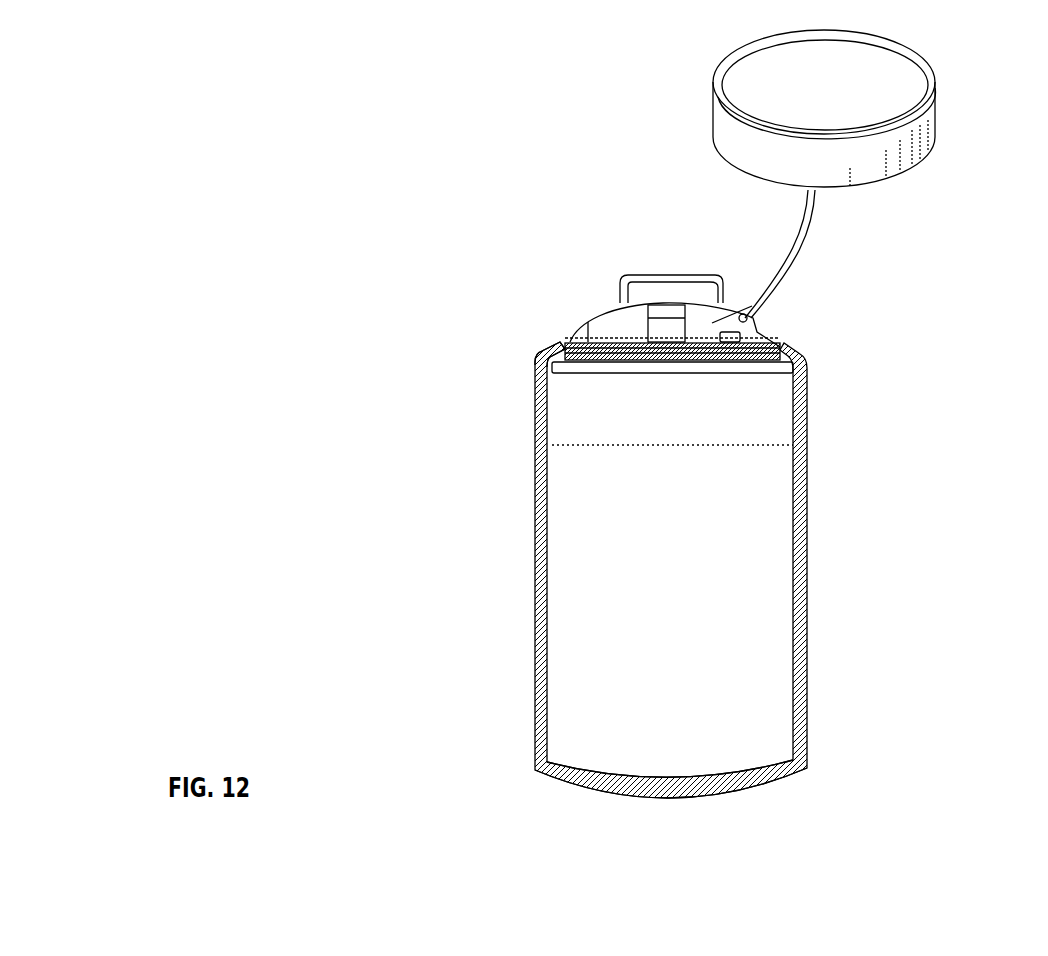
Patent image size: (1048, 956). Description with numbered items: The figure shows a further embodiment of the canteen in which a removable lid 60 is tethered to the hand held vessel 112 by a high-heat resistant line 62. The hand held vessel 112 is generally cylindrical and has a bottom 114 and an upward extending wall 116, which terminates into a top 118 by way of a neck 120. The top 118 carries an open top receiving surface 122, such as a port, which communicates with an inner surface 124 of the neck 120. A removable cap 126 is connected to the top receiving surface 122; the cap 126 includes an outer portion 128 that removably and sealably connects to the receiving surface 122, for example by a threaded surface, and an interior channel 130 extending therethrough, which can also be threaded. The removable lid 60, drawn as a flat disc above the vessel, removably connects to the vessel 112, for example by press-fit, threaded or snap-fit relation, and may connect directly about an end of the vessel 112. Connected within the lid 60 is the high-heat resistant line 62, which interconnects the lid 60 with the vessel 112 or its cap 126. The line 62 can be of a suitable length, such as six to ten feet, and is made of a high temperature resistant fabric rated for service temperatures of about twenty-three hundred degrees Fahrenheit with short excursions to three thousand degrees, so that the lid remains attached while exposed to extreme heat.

The removable lid 60 is at (935, 117).
The high-heat resistant line 62 is at (800, 248).
The hand held vessel 112 is at (807, 333).
The bottom 114 is at (780, 784).
The upward extending wall 116 is at (808, 593).
The top 118 is at (567, 334).
The neck 120 is at (548, 357).
The open top receiving surface 122 is at (756, 318).
The inner surface 124 is at (589, 336).
The removable cap 126 is at (740, 312).
The outer portion 128 is at (752, 363).
The interior channel 130 is at (640, 320).